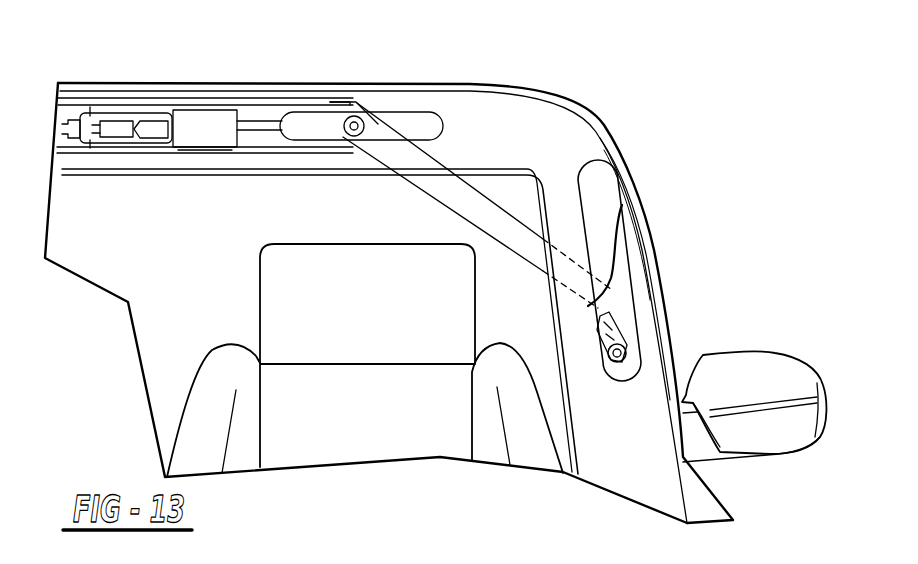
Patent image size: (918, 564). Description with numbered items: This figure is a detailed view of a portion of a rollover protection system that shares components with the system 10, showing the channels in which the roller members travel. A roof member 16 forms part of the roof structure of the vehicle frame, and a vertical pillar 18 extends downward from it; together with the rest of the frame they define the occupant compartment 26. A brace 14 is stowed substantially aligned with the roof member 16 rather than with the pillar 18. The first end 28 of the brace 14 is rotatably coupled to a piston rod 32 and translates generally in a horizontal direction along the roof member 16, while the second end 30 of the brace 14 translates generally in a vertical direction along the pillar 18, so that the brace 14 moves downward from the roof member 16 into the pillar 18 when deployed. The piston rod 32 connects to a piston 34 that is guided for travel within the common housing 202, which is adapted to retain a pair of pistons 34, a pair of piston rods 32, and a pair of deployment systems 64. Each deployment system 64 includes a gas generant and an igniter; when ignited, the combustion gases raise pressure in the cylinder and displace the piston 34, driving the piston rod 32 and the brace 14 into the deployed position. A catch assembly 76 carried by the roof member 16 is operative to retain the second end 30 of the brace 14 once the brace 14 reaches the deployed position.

The rollover protection system 10 is at (530, 157).
The brace 14 is at (487, 203).
The roof member 16 is at (200, 83).
The pillar 18 is at (655, 268).
The occupant compartment 26 is at (164, 240).
The first end 28 is at (372, 125).
The second end 30 is at (622, 205).
The piston rod 32 is at (300, 128).
The piston 34 is at (243, 118).
The deployment system 64 is at (125, 110).
The catch assembly 76 is at (600, 312).
The common housing 202 is at (85, 110).